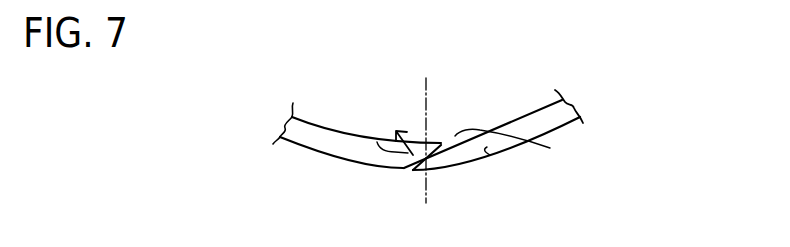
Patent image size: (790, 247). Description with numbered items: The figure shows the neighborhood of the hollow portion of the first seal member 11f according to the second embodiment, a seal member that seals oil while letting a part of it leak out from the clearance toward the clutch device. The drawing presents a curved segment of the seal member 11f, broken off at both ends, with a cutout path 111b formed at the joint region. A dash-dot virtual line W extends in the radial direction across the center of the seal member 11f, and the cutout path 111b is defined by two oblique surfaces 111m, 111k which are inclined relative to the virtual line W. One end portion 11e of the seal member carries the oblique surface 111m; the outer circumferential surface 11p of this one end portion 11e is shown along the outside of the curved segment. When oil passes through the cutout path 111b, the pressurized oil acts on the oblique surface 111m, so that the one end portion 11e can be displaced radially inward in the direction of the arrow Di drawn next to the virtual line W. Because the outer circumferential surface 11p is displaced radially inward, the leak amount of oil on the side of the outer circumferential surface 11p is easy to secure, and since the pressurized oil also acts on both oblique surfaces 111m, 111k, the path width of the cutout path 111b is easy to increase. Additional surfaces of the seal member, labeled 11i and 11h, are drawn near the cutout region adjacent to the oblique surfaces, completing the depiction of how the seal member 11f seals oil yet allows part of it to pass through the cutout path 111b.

The one end portion 11e is at (337, 135).
The outer circumferential surface 11p is at (385, 171).
The first seal member 11f is at (570, 108).
The inner surface of core segment 11i is at (550, 148).
The engaging surface of core segment 11h is at (490, 155).
The oblique surface 111k is at (441, 144).
The cutout path 111b is at (447, 141).
The oblique surface 111m is at (410, 172).
The arrow direction Di is at (377, 142).
The virtual line W is at (430, 92).